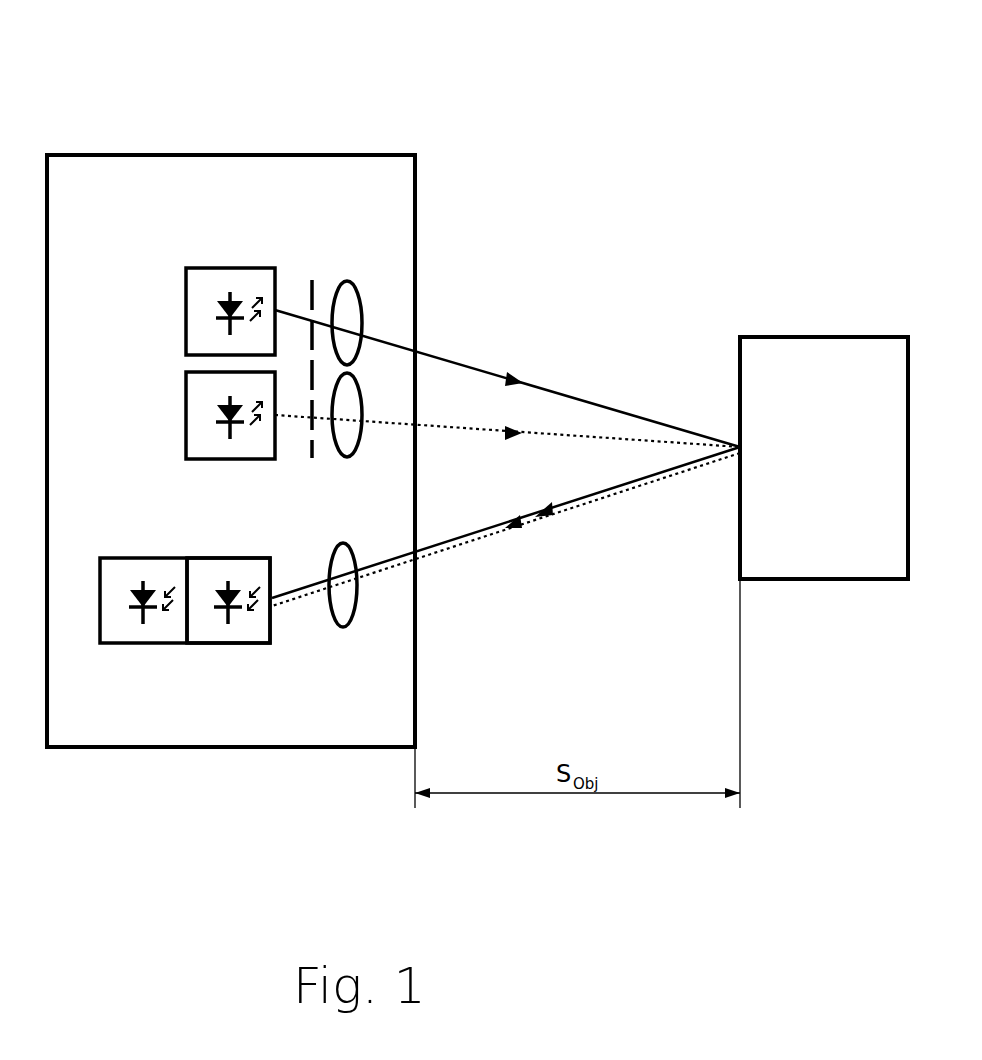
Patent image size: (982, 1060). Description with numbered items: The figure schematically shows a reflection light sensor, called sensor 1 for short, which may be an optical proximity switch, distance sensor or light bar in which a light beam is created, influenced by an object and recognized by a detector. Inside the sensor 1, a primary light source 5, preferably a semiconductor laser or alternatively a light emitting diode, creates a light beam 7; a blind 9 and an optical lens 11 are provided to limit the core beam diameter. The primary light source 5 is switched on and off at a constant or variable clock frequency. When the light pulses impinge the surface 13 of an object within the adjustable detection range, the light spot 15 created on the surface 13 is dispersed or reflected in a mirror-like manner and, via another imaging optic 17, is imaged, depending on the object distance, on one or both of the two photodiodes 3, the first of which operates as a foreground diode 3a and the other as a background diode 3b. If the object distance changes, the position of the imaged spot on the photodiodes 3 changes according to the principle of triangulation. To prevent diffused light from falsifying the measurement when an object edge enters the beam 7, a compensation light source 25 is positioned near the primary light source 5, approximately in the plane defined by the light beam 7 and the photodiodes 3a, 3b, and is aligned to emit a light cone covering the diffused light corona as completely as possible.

The sensor 1 is at (130, 150).
The photodiodes 3 is at (164, 644).
The foreground diode 3a is at (208, 630).
The background diode 3b is at (117, 643).
The primary light source 5 is at (213, 268).
The light beam 7 is at (532, 385).
The blind 9 is at (312, 280).
The optical lens 11 is at (358, 300).
The surface of an object 13 is at (740, 391).
The light spot 15 is at (740, 447).
The imaging optic 17 is at (357, 596).
The compensation light source 25 is at (215, 449).